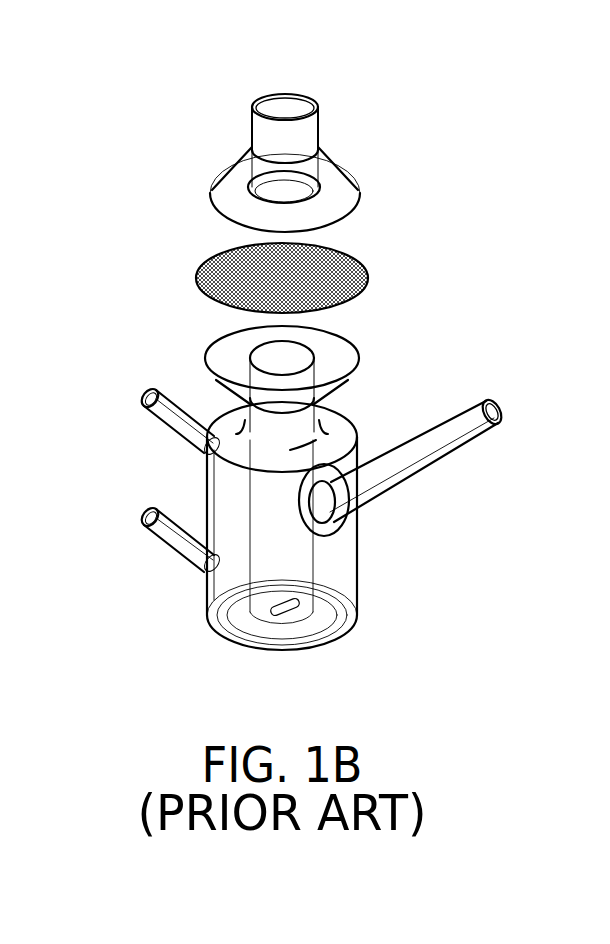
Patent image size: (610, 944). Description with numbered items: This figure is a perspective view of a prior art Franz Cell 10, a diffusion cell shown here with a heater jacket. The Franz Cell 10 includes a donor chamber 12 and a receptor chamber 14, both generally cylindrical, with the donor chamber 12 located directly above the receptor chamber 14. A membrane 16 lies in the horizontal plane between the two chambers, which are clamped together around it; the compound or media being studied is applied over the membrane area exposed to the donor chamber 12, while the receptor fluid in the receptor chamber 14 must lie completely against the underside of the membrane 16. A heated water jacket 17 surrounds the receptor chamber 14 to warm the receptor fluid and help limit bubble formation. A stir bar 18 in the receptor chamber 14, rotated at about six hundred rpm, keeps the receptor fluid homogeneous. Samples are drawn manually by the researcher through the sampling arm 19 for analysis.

The Franz Cell 10 is at (488, 505).
The donor chamber 12 is at (272, 138).
The receptor chamber 14 is at (310, 563).
The membrane 16 is at (218, 298).
The heated water jacket 17 is at (203, 582).
The stir bar 18 is at (285, 608).
The sampling arm 19 is at (483, 437).